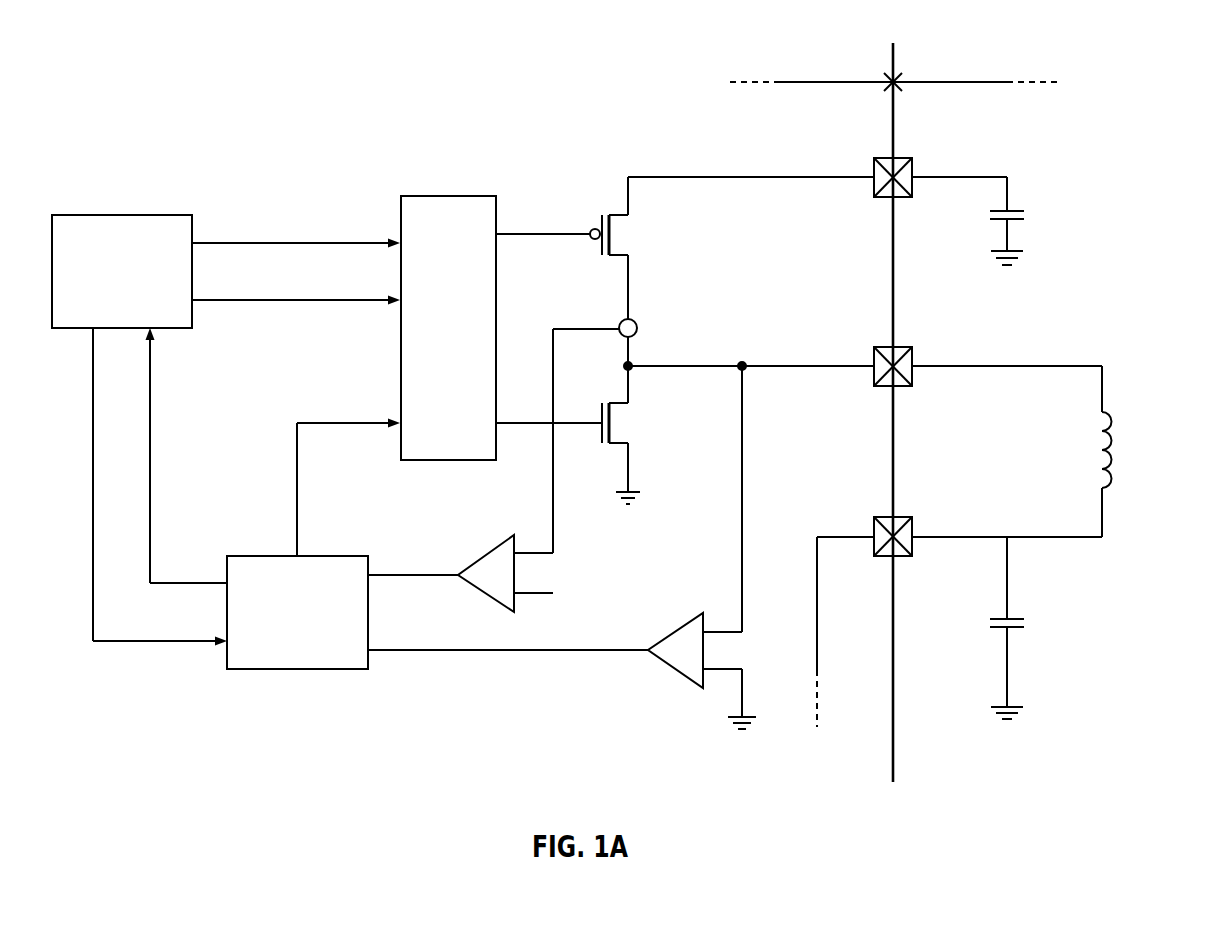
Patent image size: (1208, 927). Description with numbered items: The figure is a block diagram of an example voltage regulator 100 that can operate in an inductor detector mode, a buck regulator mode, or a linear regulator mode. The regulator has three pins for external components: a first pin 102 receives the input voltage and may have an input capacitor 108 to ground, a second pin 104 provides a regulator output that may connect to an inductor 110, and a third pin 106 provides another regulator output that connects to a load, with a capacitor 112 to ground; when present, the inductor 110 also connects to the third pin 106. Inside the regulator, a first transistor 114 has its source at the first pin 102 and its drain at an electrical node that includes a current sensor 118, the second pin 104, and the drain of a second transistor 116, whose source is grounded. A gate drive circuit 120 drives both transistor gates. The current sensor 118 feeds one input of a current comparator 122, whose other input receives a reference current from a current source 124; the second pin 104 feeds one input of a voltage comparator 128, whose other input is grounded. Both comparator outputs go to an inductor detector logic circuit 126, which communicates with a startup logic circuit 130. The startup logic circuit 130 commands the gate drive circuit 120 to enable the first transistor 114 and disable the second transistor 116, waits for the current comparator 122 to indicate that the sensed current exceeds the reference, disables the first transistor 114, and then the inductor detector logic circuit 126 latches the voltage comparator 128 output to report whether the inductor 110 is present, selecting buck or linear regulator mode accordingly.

The voltage regulator 100 is at (187, 57).
The first pin 102 is at (905, 158).
The second pin 104 is at (905, 347).
The third pin 106 is at (905, 517).
The input capacitor 108 is at (1024, 216).
The inductor 110 is at (1112, 461).
The capacitor 112 is at (1024, 622).
The first transistor 114 is at (613, 240).
The second transistor 116 is at (613, 430).
The current sensor 118 is at (645, 326).
The gate drive circuit 120 is at (450, 196).
The current comparator 122 is at (488, 553).
The current source 124 is at (537, 594).
The inductor detector logic circuit 126 is at (290, 556).
The voltage comparator 128 is at (678, 672).
The startup logic circuit 130 is at (115, 215).